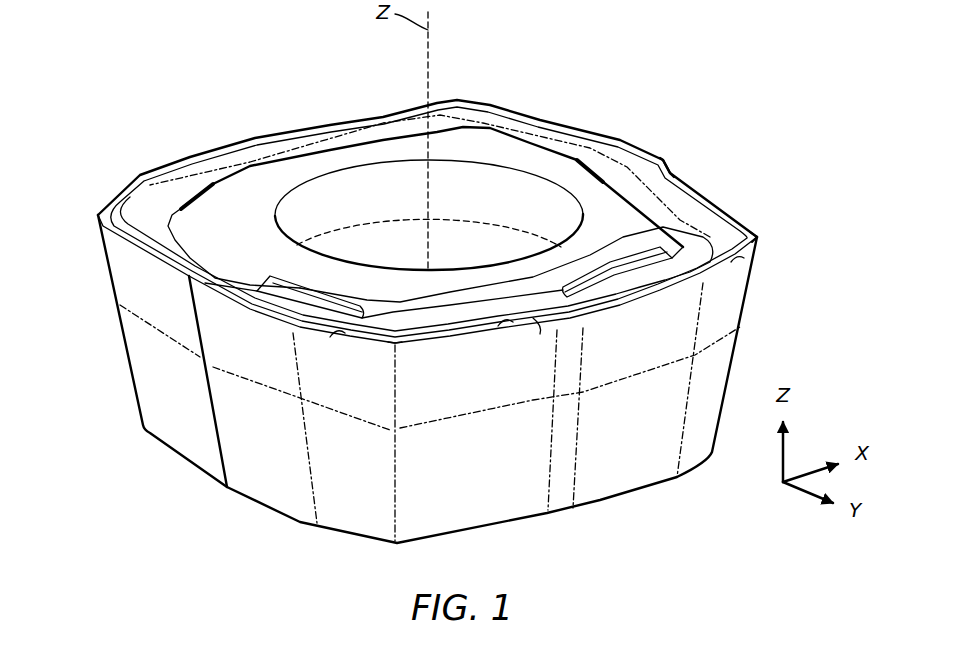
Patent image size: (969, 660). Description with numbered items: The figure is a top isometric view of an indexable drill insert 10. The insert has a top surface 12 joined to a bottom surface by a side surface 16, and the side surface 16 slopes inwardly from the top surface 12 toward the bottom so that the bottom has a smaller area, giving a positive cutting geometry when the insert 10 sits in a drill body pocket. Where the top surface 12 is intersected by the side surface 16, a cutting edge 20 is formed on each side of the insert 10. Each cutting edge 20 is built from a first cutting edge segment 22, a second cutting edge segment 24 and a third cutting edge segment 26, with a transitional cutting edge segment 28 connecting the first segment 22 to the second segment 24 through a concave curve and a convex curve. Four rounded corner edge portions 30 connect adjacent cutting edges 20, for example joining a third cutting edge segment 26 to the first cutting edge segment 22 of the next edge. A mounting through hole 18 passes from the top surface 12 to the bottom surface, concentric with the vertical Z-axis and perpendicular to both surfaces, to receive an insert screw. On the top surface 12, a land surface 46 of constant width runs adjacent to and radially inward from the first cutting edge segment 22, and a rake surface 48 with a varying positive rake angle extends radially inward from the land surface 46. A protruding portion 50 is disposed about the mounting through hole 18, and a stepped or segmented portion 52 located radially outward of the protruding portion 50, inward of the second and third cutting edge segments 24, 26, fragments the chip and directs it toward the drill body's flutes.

The indexable drill insert 10 is at (112, 62).
The top surface 12 is at (498, 150).
The side surface 16 is at (263, 473).
The mounting through hole 18 is at (493, 197).
The cutting edge 20 is at (262, 128).
The first cutting edge segment 22 is at (507, 322).
The second cutting edge segment 24 is at (660, 160).
The third cutting edge segment 26 is at (338, 332).
The transitional cutting edge segment 28 is at (518, 333).
The corner edge portion 30 is at (758, 238).
The land surface 46 is at (137, 182).
The rake surface 48 is at (133, 215).
The protruding portion 50 is at (253, 190).
The stepped or segmented portion 52 is at (200, 190).